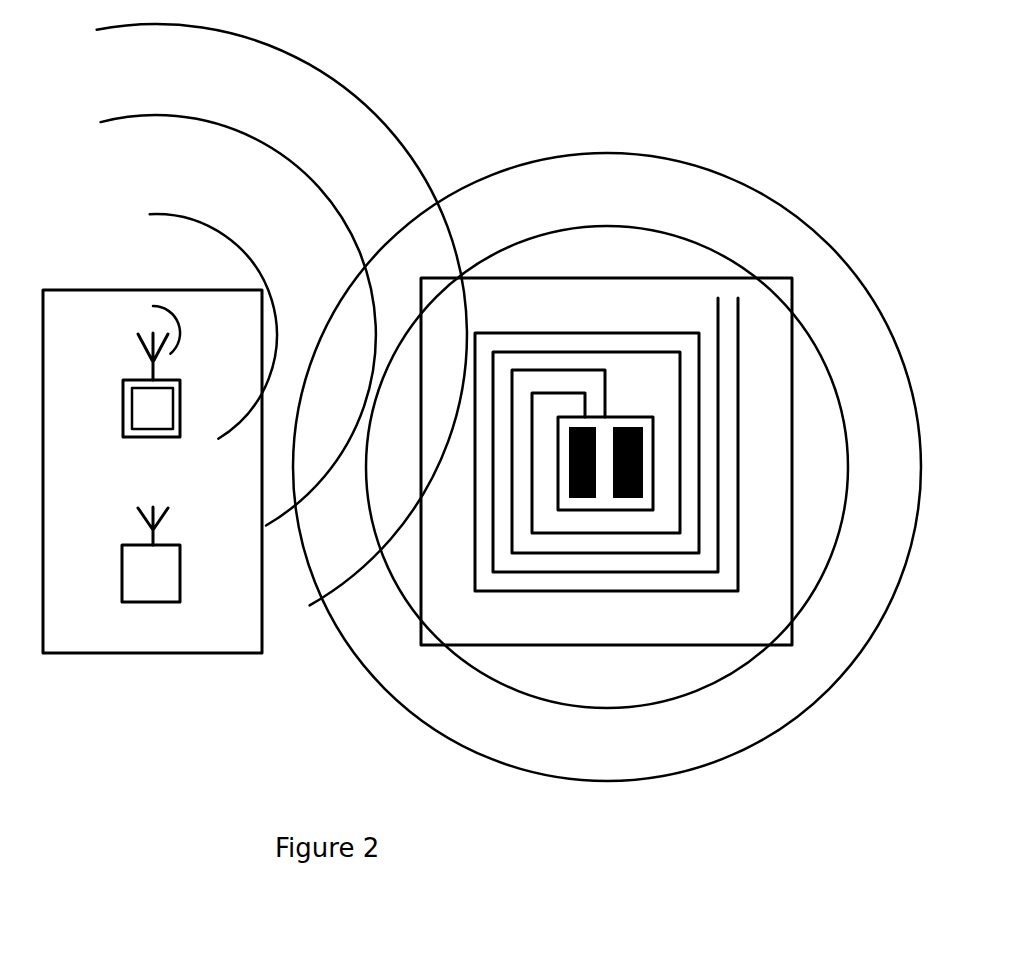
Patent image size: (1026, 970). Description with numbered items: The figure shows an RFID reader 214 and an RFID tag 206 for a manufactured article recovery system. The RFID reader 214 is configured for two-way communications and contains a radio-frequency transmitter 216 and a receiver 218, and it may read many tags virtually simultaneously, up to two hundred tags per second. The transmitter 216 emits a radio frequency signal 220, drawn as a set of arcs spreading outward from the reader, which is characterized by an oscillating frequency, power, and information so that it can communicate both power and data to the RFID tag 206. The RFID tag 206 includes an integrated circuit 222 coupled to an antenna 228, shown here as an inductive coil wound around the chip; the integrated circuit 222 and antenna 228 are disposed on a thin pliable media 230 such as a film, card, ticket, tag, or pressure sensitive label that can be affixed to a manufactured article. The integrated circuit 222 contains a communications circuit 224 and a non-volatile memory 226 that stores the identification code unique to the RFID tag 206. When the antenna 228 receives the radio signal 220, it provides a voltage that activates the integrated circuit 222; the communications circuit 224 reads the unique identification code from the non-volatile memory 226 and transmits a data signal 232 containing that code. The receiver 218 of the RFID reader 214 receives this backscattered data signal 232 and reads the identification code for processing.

The RFID tag 206 is at (603, 647).
The RFID reader 214 is at (70, 290).
The RF transmitter 216 is at (125, 380).
The receiver 218 is at (122, 547).
The radio frequency signal 220 is at (230, 128).
The integrated circuit 222 is at (558, 463).
The communications circuit 224 is at (642, 430).
The non-volatile memory 226 is at (592, 500).
The antenna 228 is at (702, 592).
The pliable media 230 is at (728, 627).
The data signal 232 is at (440, 727).